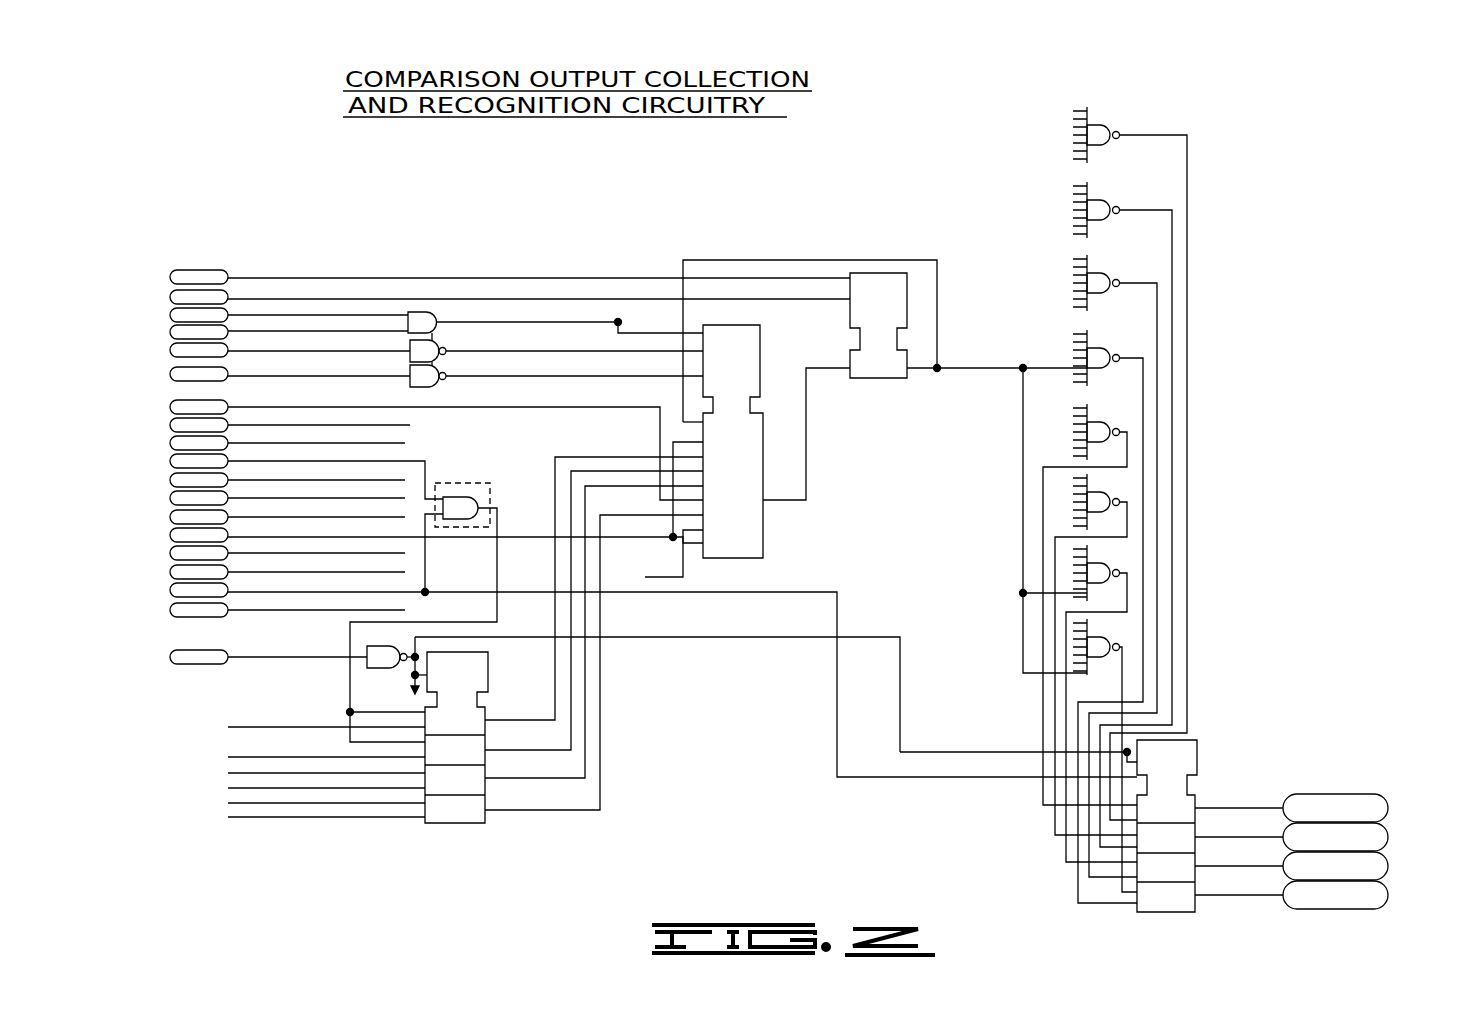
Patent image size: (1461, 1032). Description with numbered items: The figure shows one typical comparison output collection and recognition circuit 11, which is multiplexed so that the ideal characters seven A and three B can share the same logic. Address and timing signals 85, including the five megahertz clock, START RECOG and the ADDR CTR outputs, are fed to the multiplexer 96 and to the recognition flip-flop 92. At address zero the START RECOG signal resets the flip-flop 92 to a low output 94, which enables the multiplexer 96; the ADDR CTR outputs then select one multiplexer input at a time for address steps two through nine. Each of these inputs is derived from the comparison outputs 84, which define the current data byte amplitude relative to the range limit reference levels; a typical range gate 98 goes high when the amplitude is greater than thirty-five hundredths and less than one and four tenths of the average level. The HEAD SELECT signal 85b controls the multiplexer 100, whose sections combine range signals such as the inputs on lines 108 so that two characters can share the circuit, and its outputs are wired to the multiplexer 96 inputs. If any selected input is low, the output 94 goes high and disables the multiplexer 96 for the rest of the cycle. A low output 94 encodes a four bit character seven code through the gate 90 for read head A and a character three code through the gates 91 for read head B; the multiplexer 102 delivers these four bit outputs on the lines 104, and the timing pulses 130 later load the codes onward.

The comparison output collection and recognition circuit 11 is at (566, 212).
The address and timing signals 85 is at (165, 268).
The HEAD SELECT signal 85b is at (170, 657).
The comparison outputs 84 is at (168, 675).
The range gate 98 is at (422, 612).
The multiplexer 96 is at (711, 535).
The recognition flip-flop 92 is at (968, 325).
The timing pulses 130 is at (618, 322).
The output 94 is at (1035, 519).
The gate 90 is at (1200, 127).
The gates 91 is at (1200, 655).
The multiplexer 100 is at (498, 737).
The multiplexer 102 is at (1048, 826).
The lines 104 is at (1388, 780).
The register input lines 108 is at (228, 720).